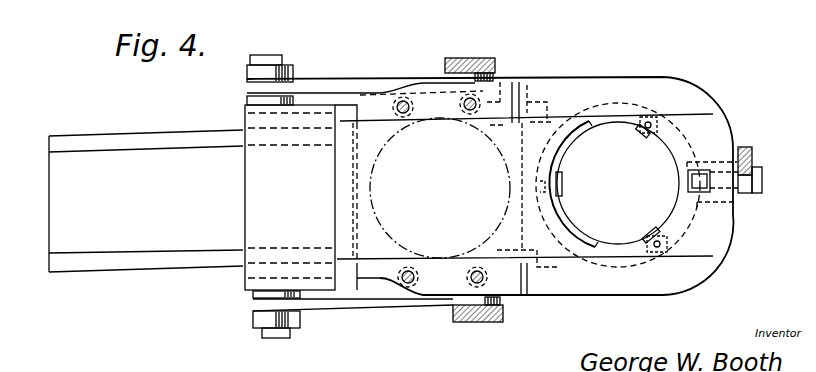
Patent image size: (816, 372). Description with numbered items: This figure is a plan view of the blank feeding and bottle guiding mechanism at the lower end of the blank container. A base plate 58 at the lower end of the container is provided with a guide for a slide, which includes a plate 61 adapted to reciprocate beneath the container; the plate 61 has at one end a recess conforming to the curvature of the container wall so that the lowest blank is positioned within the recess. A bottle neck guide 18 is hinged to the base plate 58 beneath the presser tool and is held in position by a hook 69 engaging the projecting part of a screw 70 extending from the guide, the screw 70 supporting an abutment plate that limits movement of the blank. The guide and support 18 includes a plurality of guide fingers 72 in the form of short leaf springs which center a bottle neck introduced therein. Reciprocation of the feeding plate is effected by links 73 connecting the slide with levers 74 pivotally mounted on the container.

The base plate 58 is at (207, 235).
The plate 61 is at (440, 188).
The bottle neck guide 18 is at (620, 186).
The guide fingers 72 is at (650, 233).
The hook 69 is at (747, 147).
The screw 70 is at (762, 178).
The links 73 is at (376, 84).
The levers 74 is at (490, 58).